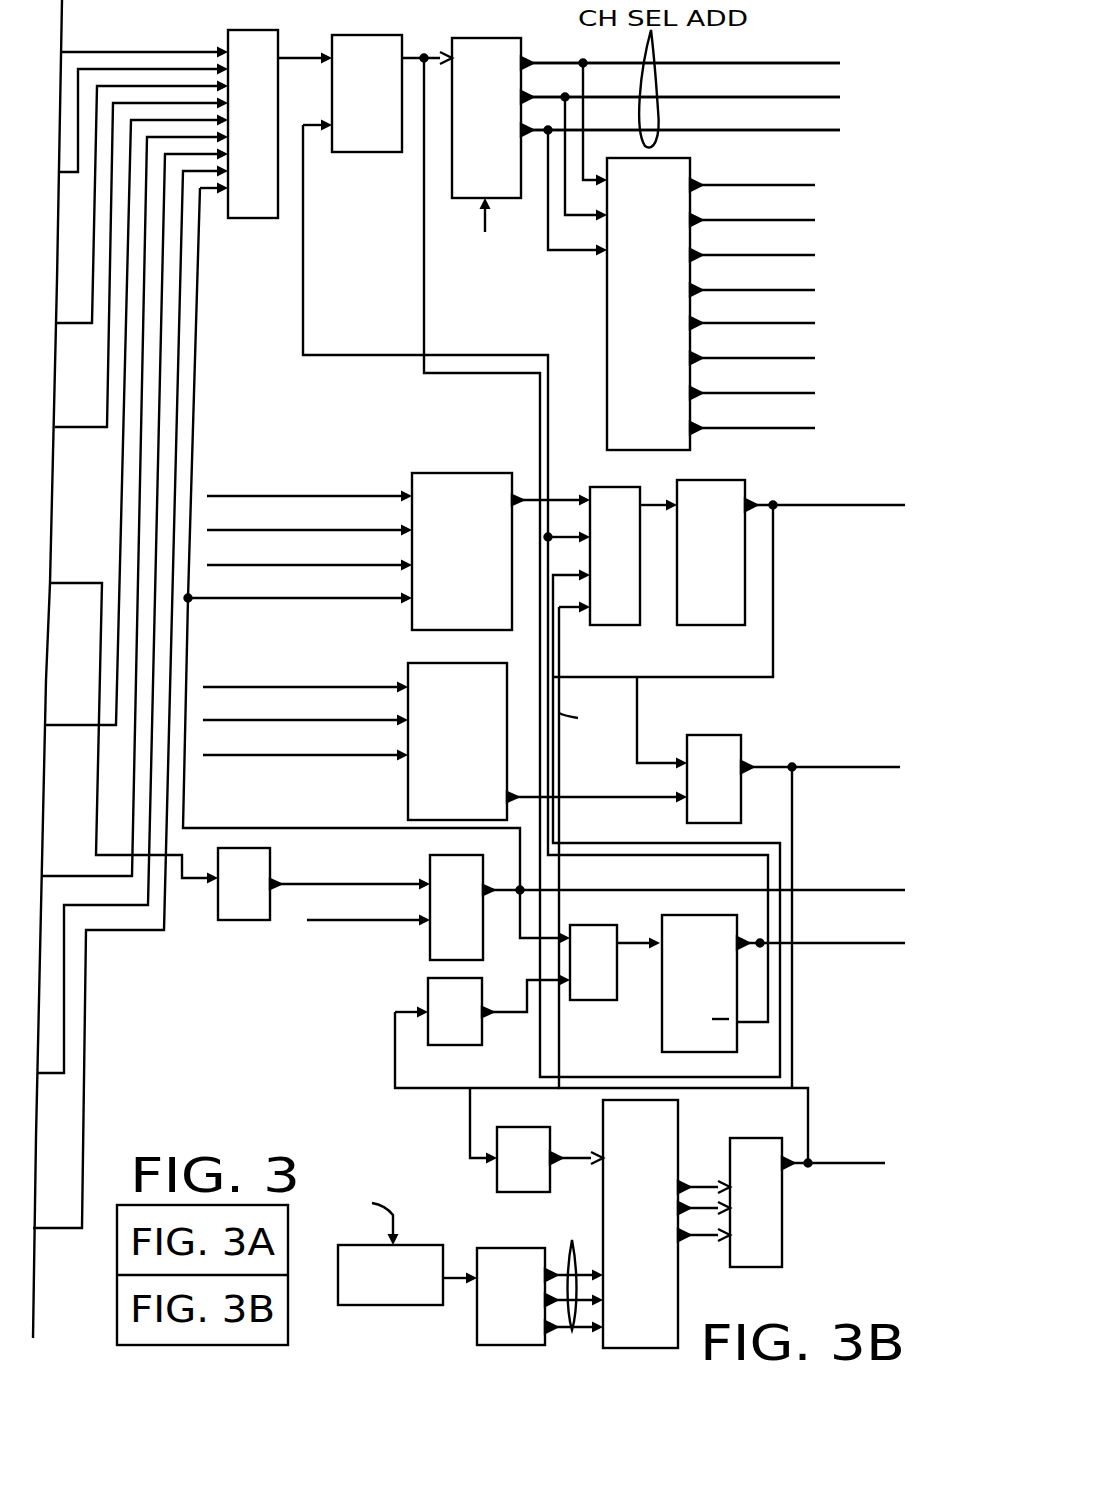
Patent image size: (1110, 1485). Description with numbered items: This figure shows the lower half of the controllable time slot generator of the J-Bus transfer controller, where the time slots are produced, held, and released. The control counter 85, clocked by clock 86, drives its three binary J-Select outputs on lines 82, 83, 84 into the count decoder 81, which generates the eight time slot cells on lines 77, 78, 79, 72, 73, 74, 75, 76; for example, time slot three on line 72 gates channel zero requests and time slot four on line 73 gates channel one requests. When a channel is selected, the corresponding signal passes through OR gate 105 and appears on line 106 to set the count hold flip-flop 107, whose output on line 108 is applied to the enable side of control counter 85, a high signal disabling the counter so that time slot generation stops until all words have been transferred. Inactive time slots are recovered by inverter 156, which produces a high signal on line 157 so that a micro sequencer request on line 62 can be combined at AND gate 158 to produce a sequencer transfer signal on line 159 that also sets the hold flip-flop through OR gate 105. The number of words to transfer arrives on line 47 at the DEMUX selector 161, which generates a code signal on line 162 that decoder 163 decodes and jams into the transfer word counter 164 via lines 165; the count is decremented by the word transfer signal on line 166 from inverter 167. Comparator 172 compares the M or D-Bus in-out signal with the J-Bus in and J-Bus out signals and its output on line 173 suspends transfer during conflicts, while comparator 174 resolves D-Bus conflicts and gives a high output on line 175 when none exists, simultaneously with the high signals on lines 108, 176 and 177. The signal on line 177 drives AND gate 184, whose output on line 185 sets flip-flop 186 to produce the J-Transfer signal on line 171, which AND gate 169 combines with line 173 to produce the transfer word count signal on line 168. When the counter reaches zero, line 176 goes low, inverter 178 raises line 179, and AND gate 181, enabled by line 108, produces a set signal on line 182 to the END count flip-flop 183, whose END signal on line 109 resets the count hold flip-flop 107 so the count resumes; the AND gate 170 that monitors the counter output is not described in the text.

The OR gate 105 is at (252, 218).
The output line of OR gate 106 is at (306, 52).
The count hold flip-flop 107 is at (360, 152).
The count hold output line 108 is at (426, 52).
The reset / END signal line 109 is at (303, 240).
The control counter 85 is at (503, 198).
The clock 86 is at (485, 228).
The count decoder 81 is at (603, 277).
The J-Select 1 line 82 is at (840, 66).
The J-Select 2 line 83 is at (840, 100).
The J-Select 0 line 84 is at (840, 133).
The time slot line TS0 77 is at (815, 185).
The time slot line TS1 78 is at (815, 220).
The time slot line TS2 79 is at (815, 255).
The time slot line TS3 72 is at (815, 290).
The time slot line TS4 73 is at (815, 323).
The time slot line TS5 74 is at (815, 358).
The time slot line TS6 75 is at (815, 393).
The time slot line TS7 76 is at (815, 428).
The comparator 174 is at (450, 473).
The comparator output line 175 is at (528, 497).
The AND gate 184 is at (600, 625).
The output line of AND gate 184 185 is at (666, 500).
The J-Bus transfer flip-flop 186 is at (705, 625).
The J-Transfer signal line 171 is at (773, 600).
The counter not-zero output line 176 is at (553, 683).
The pre-END signal line 177 is at (815, 1012).
The comparator 172 is at (403, 785).
The comparator output line 173 is at (640, 797).
The AND gate 169 is at (718, 735).
The transfer word count signal line 168 is at (792, 800).
The inverter 156 is at (232, 920).
The inactive time slot line 157 is at (388, 884).
The micro sequencer request line 62 is at (330, 922).
The AND gate 158 is at (428, 945).
The sequencer transfer signal line 159 is at (672, 893).
The inverter 178 is at (427, 1000).
The inverter output line 179 is at (510, 1015).
The AND gate 181 is at (586, 1000).
The set signal line 182 is at (638, 938).
The END count flip-flop 183 is at (660, 1030).
The inverter 167 is at (495, 1177).
The word transfer signal line 166 is at (578, 1155).
The transfer word counter 164 is at (683, 1125).
The AND gate 170 is at (785, 1242).
The DEMUX selector 161 is at (400, 1308).
The control line 47 is at (368, 1211).
The code signal line 162 is at (455, 1285).
The decoder 163 is at (497, 1250).
The count lines 165 is at (574, 1272).